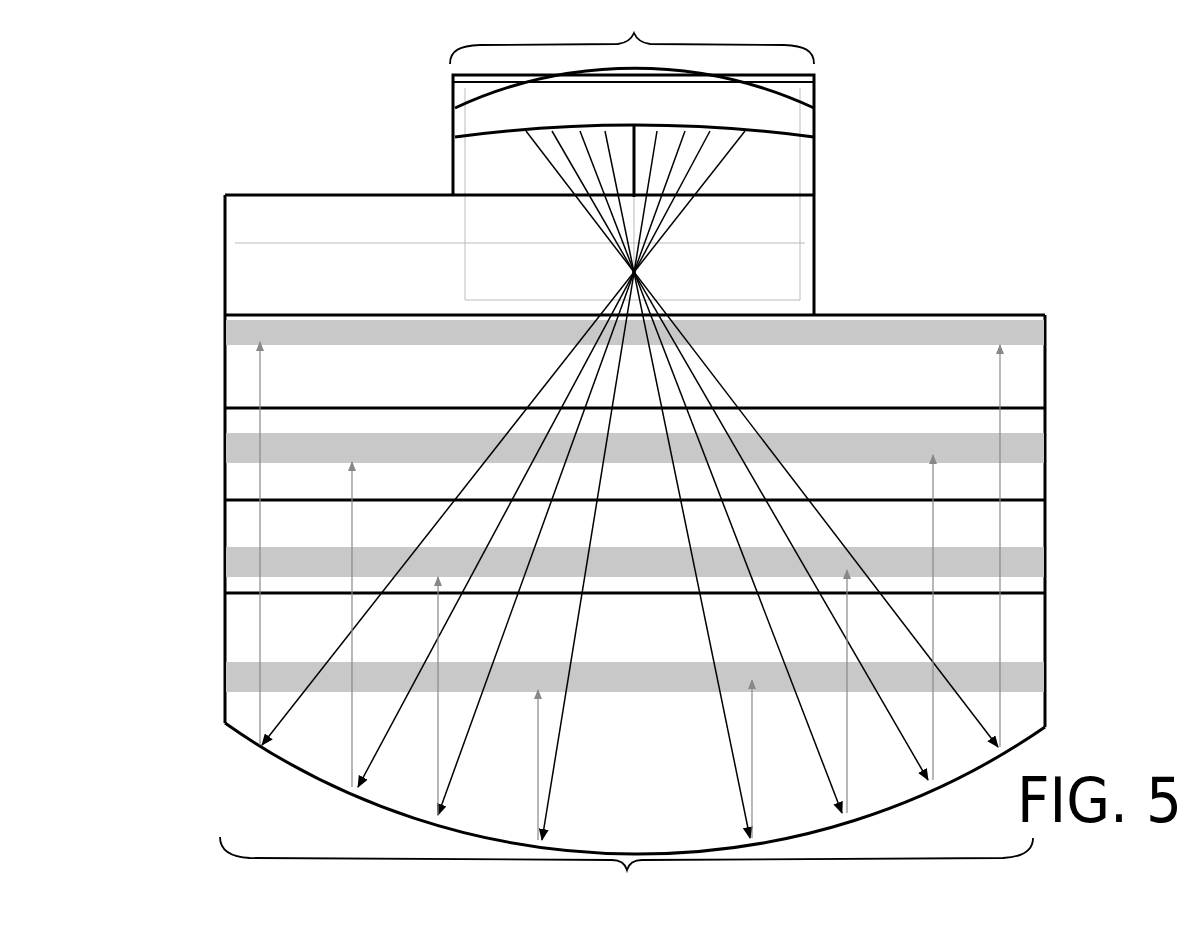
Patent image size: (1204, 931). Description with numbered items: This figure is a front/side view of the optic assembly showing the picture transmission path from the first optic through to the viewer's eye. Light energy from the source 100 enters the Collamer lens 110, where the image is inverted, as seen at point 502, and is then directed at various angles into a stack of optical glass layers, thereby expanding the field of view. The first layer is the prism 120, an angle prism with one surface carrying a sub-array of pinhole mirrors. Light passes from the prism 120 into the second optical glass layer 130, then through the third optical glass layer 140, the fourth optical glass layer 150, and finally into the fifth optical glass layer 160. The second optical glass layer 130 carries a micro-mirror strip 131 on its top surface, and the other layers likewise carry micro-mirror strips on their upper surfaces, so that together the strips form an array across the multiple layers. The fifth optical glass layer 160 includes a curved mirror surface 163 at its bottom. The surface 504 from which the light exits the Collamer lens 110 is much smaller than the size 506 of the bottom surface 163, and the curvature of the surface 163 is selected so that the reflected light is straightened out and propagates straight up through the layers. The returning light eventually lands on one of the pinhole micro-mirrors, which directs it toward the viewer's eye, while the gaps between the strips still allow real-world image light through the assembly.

The source 100 is at (447, 90).
The Collamer lens 110 is at (783, 122).
The prism 120 is at (236, 226).
The second optical glass layer 130 is at (219, 400).
The micro-mirror strip 131 is at (249, 331).
The third optical glass layer 140 is at (219, 480).
The fourth optical glass layer 150 is at (217, 568).
The fifth optical glass layer 160 is at (217, 708).
The curved mirror surface 163 is at (383, 810).
The point 502 is at (638, 272).
The surface 504 is at (632, 35).
The size 506 is at (626, 867).